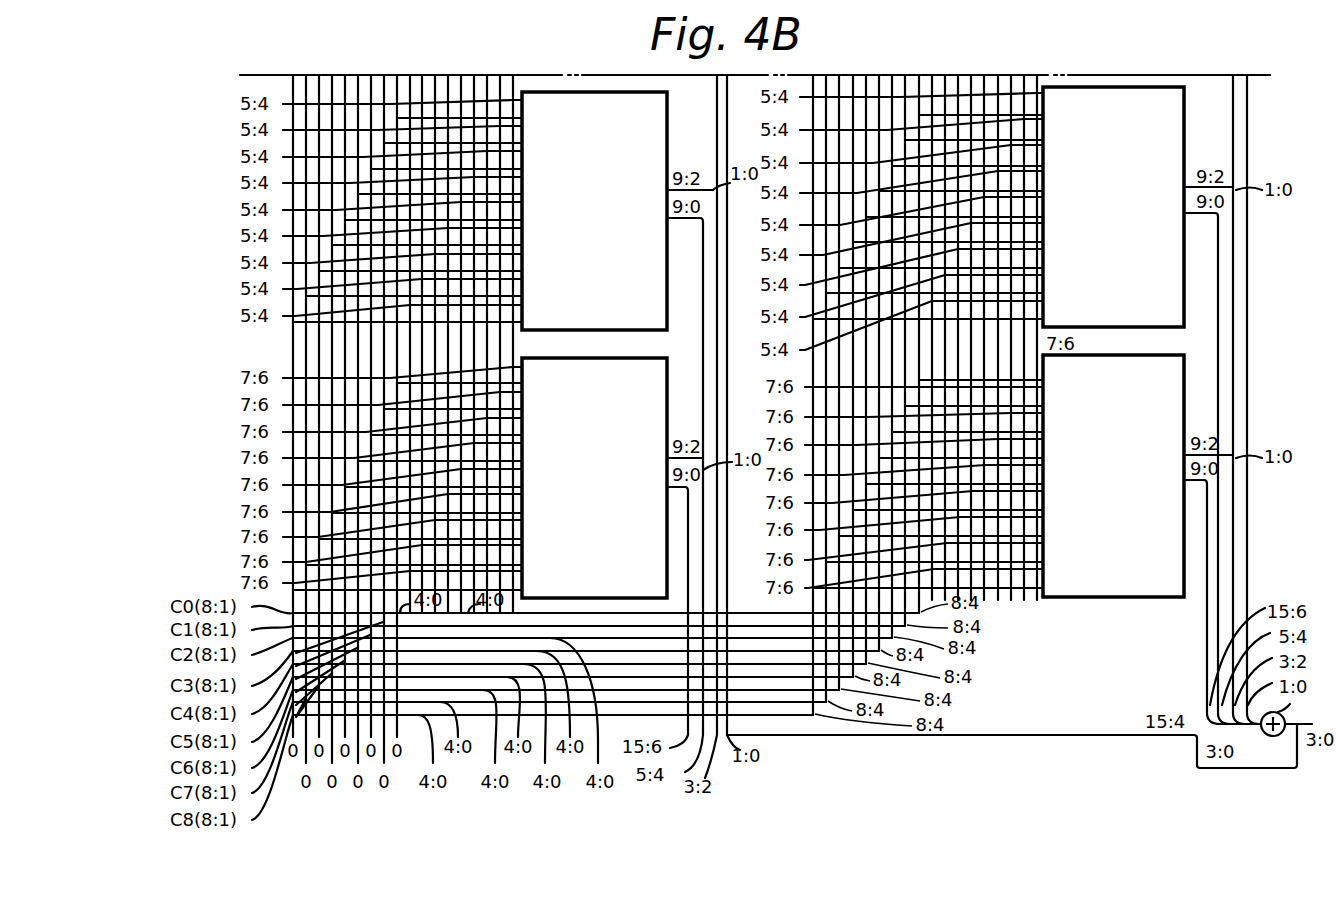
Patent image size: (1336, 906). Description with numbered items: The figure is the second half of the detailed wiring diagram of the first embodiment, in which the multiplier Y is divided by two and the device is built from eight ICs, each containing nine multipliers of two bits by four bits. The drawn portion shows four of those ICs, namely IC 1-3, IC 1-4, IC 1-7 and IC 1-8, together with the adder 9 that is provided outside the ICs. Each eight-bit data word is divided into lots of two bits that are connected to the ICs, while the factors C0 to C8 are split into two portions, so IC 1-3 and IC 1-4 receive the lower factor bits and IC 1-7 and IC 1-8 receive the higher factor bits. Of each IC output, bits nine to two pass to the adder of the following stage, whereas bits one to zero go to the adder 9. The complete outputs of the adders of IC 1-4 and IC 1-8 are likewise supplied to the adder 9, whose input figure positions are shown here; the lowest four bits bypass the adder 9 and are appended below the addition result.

The IC 1-3 is at (667, 96).
The IC 1-4 is at (662, 358).
The IC 1-7 is at (1184, 92).
The IC 1-8 is at (1102, 340).
The adder 9 is at (1282, 714).